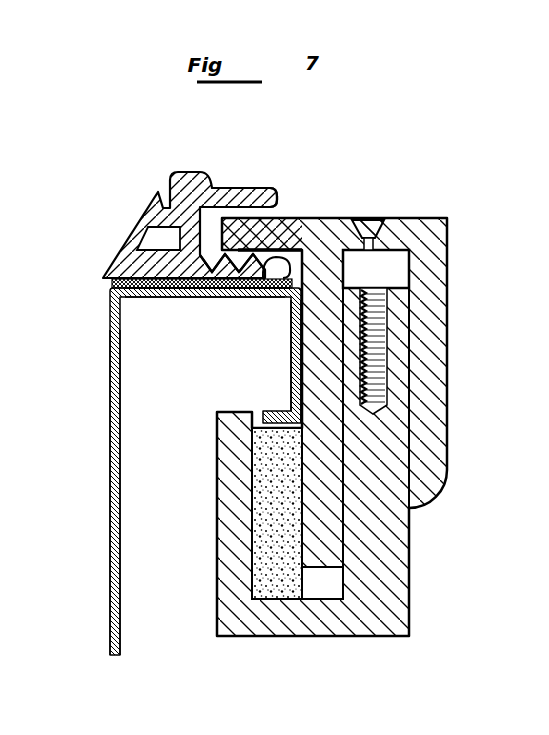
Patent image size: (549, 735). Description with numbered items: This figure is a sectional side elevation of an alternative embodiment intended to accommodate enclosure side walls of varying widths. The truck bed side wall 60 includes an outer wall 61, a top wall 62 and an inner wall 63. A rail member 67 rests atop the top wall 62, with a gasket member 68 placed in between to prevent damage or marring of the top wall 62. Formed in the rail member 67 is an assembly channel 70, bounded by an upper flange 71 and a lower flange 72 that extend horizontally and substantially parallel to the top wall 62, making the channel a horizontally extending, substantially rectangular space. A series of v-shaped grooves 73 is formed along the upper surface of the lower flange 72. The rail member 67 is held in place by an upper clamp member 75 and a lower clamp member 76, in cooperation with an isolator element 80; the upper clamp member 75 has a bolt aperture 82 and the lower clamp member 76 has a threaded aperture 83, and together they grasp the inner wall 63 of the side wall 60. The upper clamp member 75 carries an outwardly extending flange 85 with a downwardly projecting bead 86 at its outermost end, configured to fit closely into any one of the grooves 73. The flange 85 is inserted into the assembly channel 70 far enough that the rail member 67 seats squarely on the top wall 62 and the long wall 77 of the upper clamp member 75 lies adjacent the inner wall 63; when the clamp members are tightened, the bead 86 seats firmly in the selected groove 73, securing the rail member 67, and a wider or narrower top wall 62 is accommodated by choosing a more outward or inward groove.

The truck bed side wall 60 is at (172, 471).
The outer wall 61 is at (110, 541).
The top wall 62 is at (140, 300).
The inner wall 63 is at (288, 377).
The rail member 67 is at (190, 224).
The gasket member 68 is at (110, 284).
The assembly channel 70 is at (206, 183).
The upper flange 71 is at (233, 183).
The lower flange 72 is at (207, 294).
The v-shaped grooves 73 is at (276, 291).
The upper clamp member 75 is at (330, 417).
The lower clamp member 76 is at (298, 626).
The long wall 77 is at (334, 542).
The isolator element 80 is at (265, 567).
The bolt aperture 82 is at (380, 242).
The threaded aperture 83 is at (373, 292).
The outwardly extending flange 85 is at (263, 232).
The downwardly projecting bead 86 is at (238, 292).